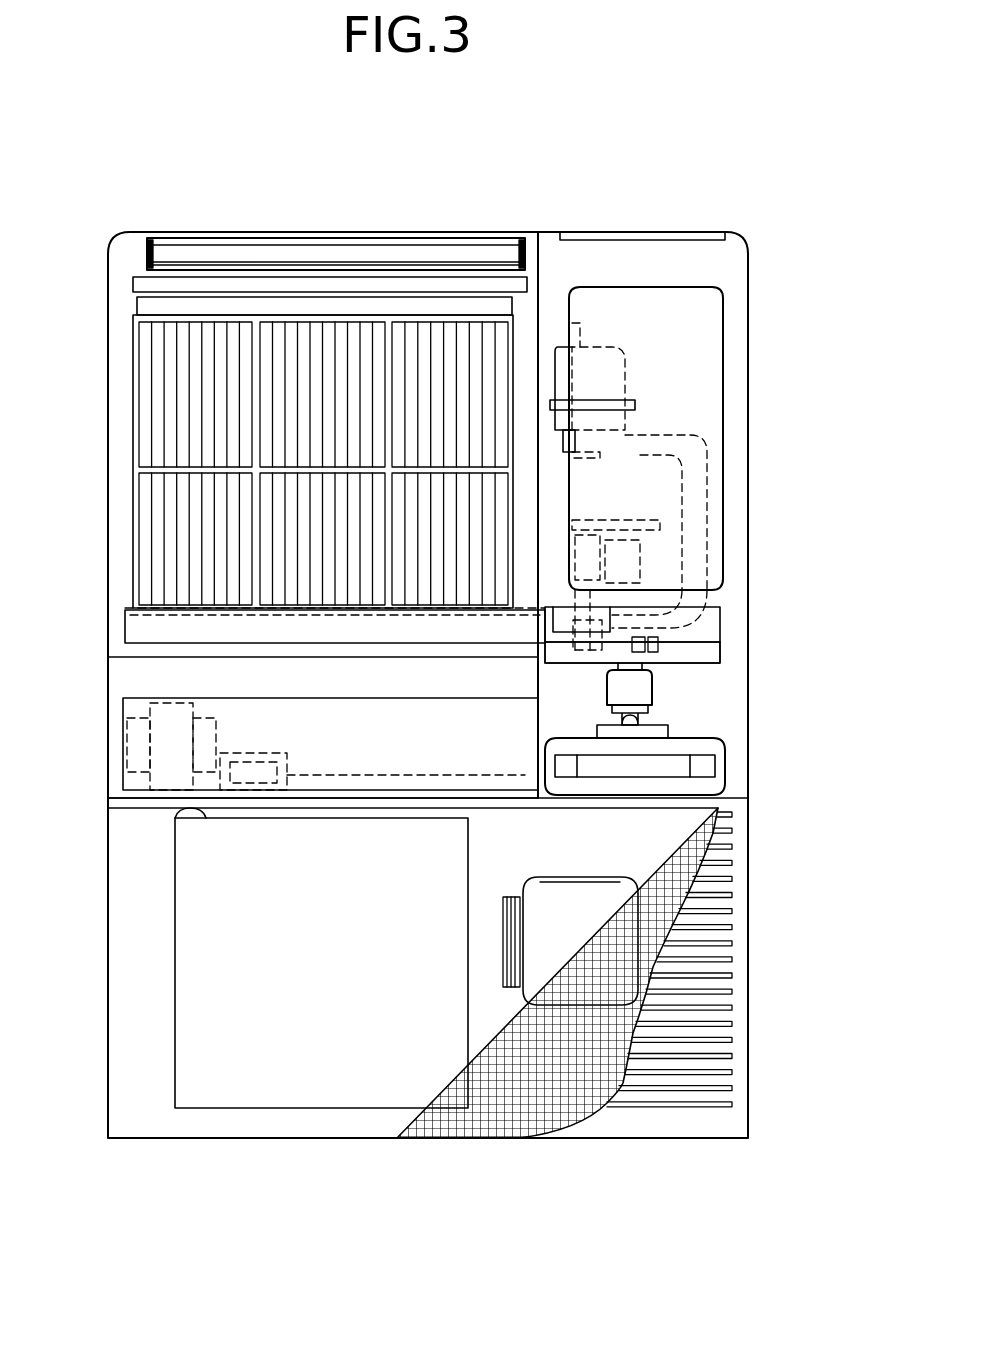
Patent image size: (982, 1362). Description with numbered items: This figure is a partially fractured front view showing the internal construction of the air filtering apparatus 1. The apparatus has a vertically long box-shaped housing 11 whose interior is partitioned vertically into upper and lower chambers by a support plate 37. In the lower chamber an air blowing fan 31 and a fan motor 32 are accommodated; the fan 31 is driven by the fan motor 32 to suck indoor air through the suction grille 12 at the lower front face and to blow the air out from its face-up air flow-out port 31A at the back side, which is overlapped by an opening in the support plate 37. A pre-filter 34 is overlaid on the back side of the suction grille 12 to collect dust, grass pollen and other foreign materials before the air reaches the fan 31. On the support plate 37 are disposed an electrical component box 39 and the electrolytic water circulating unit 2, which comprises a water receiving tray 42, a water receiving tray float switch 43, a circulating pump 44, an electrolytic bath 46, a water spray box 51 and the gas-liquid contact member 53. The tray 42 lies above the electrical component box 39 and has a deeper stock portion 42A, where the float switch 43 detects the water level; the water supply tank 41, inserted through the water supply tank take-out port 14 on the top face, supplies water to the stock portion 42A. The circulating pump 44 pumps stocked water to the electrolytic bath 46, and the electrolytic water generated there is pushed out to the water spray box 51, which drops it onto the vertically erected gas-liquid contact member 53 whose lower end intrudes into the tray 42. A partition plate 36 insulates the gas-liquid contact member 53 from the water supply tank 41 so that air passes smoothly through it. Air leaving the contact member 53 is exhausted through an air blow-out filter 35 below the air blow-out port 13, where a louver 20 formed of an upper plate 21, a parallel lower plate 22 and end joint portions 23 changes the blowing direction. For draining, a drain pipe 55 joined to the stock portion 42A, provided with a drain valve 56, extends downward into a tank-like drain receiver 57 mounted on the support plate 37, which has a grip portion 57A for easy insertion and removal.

The air filtering apparatus 1 is at (776, 134).
The electrolytic water circulating unit 2 is at (549, 298).
The housing 11 is at (746, 250).
The suction grille 12 is at (739, 963).
The air blow-out port 13 is at (412, 236).
The water supply tank take-out port 14 is at (714, 238).
The louver 20 is at (136, 257).
The upper plate 21 is at (220, 238).
The lower plate 22 is at (188, 267).
The joint portions 23 is at (160, 245).
The air blowing fan 31 is at (292, 1082).
The air flow-out port 31A is at (175, 822).
The fan motor 32 is at (545, 982).
The pre-filter 34 is at (587, 1115).
The air blow-out filter 35 is at (140, 283).
The partition plate 36 is at (542, 278).
The support plate 37 is at (145, 800).
The electrical component box 39 is at (148, 698).
The water supply tank 41 is at (725, 316).
The water receiving tray 42 is at (711, 622).
The stock portion 42A is at (712, 654).
The water receiving tray float switch 43 is at (677, 643).
The circulating pump 44 is at (602, 616).
The electrolytic bath 46 is at (614, 386).
The water spray box 51 is at (145, 308).
The gas-liquid contact member 53 is at (137, 385).
The drain pipe 55 is at (643, 666).
The drain valve 56 is at (652, 700).
The drain receiver 57 is at (720, 756).
The grip portion 57A is at (676, 771).